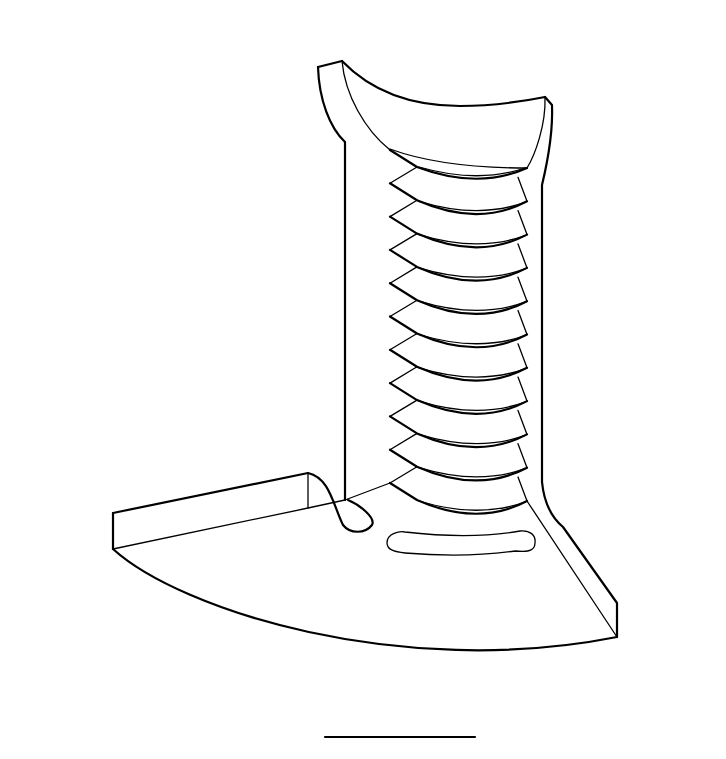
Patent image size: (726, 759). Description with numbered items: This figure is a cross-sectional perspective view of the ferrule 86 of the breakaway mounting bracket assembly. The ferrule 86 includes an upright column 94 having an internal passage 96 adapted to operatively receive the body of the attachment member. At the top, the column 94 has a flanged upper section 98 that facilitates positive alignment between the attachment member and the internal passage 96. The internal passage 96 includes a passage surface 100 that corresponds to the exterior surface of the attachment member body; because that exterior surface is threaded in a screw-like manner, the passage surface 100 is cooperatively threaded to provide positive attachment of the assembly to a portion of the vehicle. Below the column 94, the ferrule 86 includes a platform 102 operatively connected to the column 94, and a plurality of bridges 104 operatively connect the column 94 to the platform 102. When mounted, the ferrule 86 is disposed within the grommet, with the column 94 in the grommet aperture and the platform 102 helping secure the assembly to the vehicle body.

The ferrule 86 is at (204, 326).
The column 94 is at (345, 232).
The internal passage 96 is at (513, 84).
The flanged upper section 98 is at (321, 99).
The passage surface 100 is at (503, 274).
The platform 102 is at (163, 558).
The bridges 104 is at (535, 545).